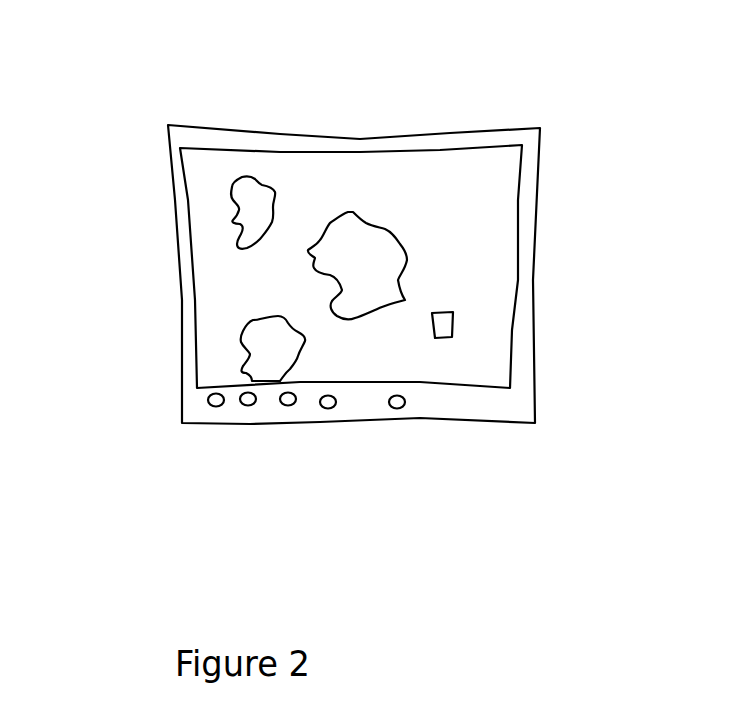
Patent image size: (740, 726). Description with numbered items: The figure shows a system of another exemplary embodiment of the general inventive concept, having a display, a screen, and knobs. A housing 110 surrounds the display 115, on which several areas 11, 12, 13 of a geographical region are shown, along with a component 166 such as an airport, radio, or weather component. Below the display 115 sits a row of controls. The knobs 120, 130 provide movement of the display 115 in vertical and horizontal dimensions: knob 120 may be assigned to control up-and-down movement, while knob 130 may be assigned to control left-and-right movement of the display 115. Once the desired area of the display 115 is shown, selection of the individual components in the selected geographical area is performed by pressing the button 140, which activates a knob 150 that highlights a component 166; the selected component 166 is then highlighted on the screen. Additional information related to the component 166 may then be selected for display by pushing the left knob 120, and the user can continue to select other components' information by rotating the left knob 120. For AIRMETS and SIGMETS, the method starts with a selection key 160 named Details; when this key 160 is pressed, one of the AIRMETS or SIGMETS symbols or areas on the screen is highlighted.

The display object 11 is at (365, 222).
The display object 12 is at (248, 175).
The display object 13 is at (248, 323).
The display device housing 110 is at (538, 182).
The display 115 is at (522, 250).
The knob 120 is at (213, 407).
The knob 130 is at (247, 406).
The button 140 is at (285, 406).
The knob 150 is at (325, 409).
The selection key 160 is at (396, 409).
The component 166 is at (450, 325).